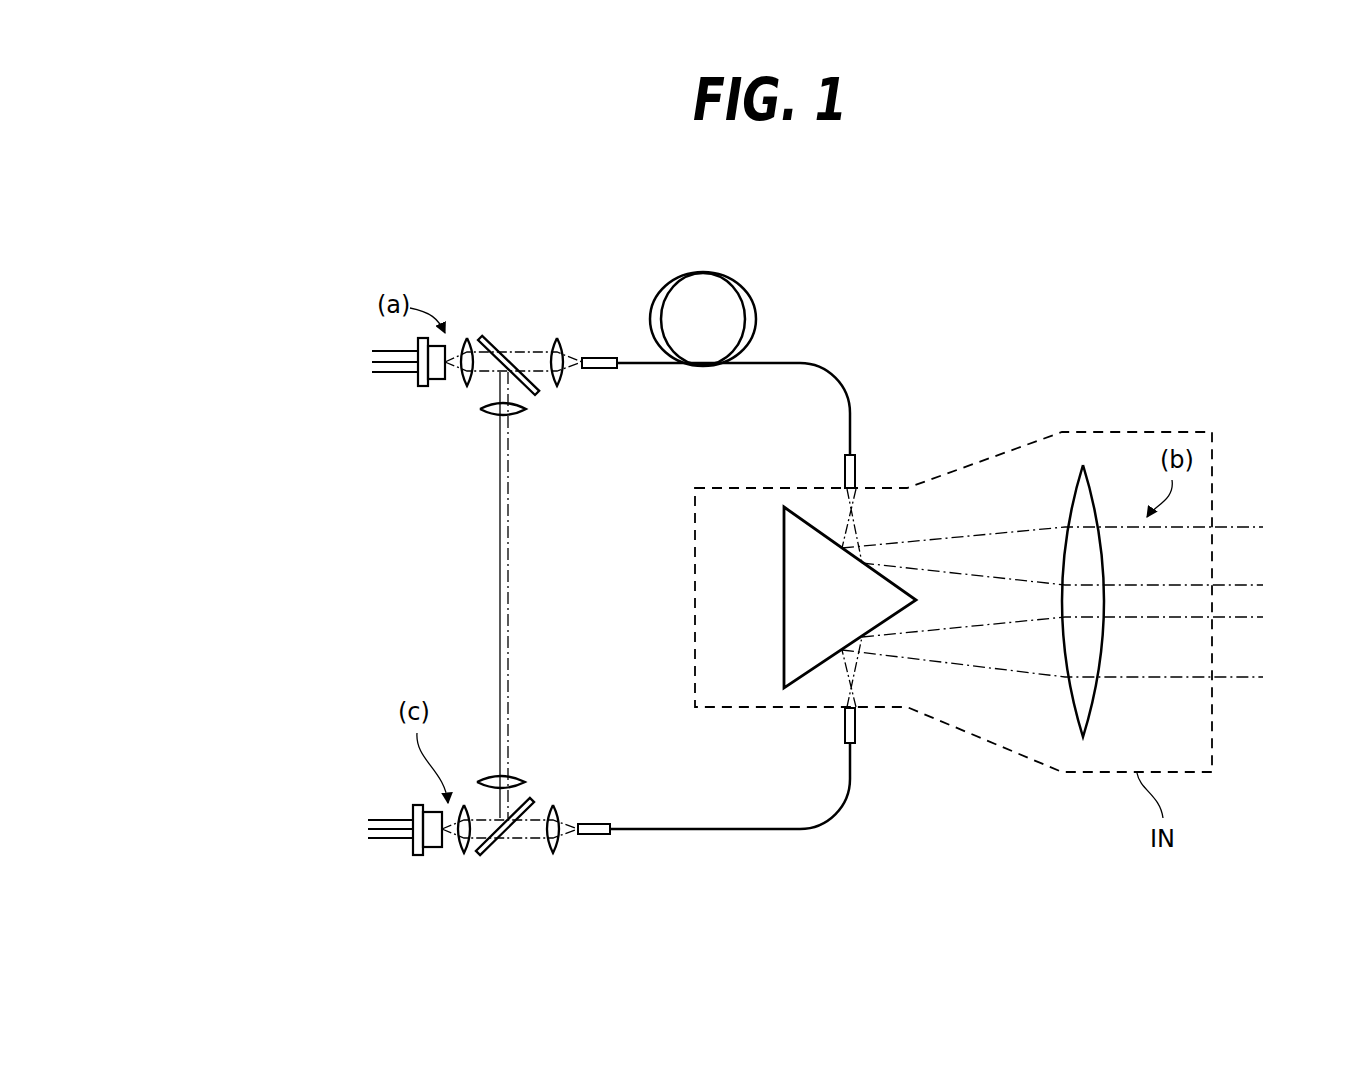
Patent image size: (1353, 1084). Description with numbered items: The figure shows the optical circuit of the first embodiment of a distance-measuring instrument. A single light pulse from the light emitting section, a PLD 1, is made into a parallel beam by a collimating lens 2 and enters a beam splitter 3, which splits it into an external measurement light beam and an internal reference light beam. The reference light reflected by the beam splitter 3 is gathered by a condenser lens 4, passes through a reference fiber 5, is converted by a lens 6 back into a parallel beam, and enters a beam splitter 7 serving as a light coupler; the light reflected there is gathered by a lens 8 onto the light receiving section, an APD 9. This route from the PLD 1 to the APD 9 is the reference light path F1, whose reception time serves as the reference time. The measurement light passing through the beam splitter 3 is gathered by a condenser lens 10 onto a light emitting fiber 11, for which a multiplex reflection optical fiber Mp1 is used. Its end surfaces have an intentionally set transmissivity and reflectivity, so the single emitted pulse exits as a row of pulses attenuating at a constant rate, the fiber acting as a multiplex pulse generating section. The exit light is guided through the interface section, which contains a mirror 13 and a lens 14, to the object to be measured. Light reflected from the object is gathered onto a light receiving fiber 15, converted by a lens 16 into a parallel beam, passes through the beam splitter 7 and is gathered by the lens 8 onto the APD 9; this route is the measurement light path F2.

The PLD (light emitting diode) 1 is at (427, 388).
The collimating lens 2 is at (466, 337).
The beam splitter (light separator) 3 is at (500, 343).
The condenser lens 4 is at (483, 412).
The reference fiber 5 is at (497, 543).
The lens 6 is at (512, 776).
The beam splitter (light coupler) 7 is at (497, 840).
The lens 8 is at (462, 848).
The APD (avalanche photodiode) 9 is at (437, 808).
The condenser lens 10 is at (560, 337).
The light emitting fiber 11 is at (762, 368).
The mirror 13 is at (800, 600).
The lens 14 is at (1080, 520).
The light receiving fiber 15 is at (800, 834).
The lens 16 is at (560, 846).
The multiplex reflection optical fiber Mp1 is at (740, 268).
The reference light path F1 is at (475, 579).
The measurement light path F2 is at (858, 401).